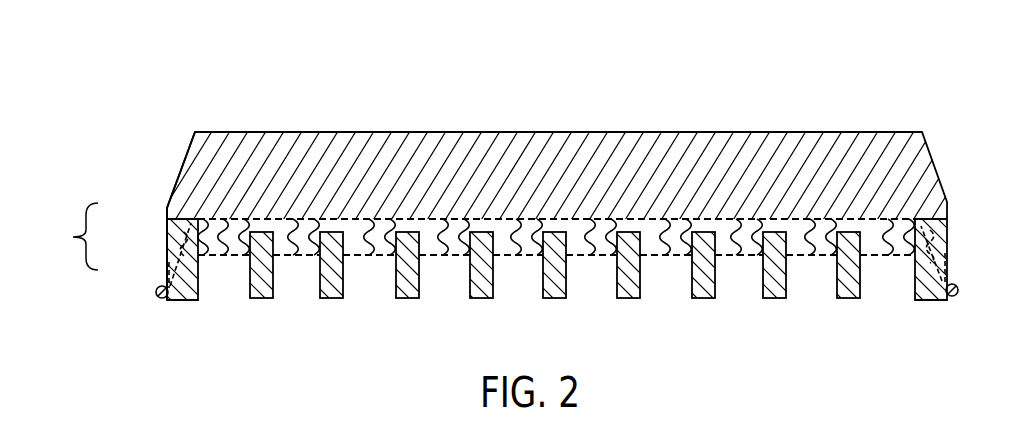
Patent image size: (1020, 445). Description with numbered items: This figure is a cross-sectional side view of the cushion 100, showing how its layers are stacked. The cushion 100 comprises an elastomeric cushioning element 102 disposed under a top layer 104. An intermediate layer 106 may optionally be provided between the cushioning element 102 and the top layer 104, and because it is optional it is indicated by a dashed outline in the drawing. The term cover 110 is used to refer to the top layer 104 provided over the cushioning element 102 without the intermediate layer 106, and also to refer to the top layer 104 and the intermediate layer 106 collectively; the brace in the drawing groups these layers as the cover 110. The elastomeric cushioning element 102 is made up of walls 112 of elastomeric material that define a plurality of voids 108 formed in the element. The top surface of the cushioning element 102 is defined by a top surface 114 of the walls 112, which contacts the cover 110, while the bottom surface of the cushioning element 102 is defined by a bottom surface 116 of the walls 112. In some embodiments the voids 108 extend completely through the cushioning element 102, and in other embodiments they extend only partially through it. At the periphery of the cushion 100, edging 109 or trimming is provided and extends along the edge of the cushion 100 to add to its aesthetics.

The cushion 100 is at (333, 100).
The elastomeric cushioning element 102 is at (842, 325).
The top layer 104 is at (169, 212).
The intermediate layer 106 is at (166, 262).
The voids 108 is at (374, 289).
The edging 109 is at (156, 292).
The cover 110 is at (70, 236).
The walls 112 is at (273, 282).
The top surface of the walls 114 is at (860, 234).
The bottom surface of the walls 116 is at (703, 298).